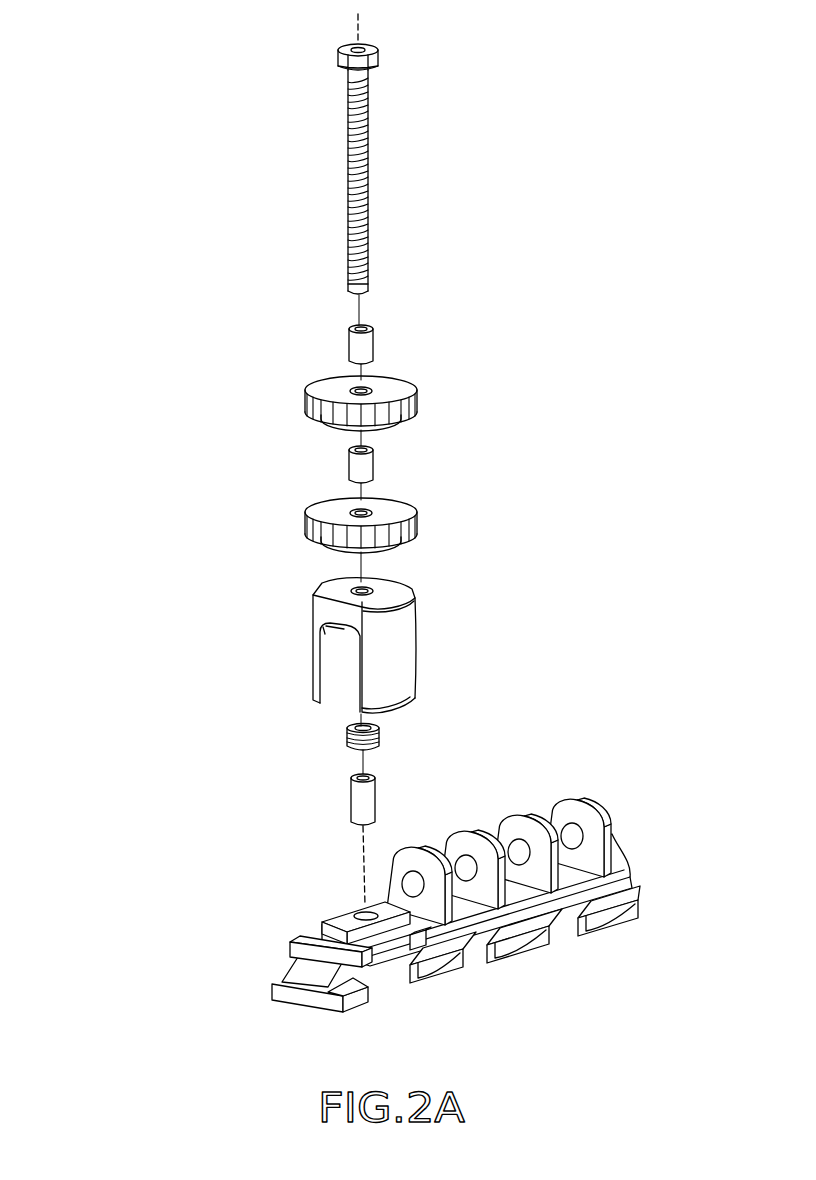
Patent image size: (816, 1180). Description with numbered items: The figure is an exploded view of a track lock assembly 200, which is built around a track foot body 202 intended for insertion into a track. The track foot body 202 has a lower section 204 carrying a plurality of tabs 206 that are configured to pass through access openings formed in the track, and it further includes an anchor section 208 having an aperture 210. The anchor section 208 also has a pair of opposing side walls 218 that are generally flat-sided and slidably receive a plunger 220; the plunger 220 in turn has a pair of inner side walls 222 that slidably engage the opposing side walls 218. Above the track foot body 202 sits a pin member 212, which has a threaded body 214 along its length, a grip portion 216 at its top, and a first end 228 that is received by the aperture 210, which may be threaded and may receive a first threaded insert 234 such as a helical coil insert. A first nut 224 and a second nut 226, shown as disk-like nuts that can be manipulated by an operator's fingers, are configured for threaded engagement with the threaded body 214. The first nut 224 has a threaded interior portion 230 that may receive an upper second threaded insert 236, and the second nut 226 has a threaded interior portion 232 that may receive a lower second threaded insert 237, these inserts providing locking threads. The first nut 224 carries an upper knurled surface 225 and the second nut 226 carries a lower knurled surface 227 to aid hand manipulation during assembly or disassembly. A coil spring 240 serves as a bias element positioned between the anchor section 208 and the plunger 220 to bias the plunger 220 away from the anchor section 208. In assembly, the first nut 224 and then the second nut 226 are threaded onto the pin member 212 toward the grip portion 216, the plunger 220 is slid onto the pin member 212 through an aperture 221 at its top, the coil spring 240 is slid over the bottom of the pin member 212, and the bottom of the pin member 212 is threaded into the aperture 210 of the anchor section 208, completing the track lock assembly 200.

The track lock assembly 200 is at (186, 57).
The grip portion 216 is at (380, 53).
The pin member 212 is at (364, 152).
The threaded body 214 is at (360, 205).
The first end 228 is at (372, 275).
The upper second threaded insert 236 is at (368, 344).
The first nut 224 is at (410, 405).
The interior portion 230 is at (352, 388).
The upper knurled surface 225 is at (320, 413).
The lower second threaded insert 237 is at (372, 464).
The second nut 226 is at (413, 527).
The interior portion 232 is at (350, 508).
The lower knurled surface 227 is at (320, 535).
The plunger 220 is at (405, 639).
The aperture 221 is at (372, 592).
The inner side walls 222 is at (335, 660).
The coil spring 240 is at (385, 741).
The first threaded insert 234 is at (372, 803).
The track foot body 202 is at (612, 851).
The lower section 204 is at (567, 938).
The tabs 206 is at (640, 913).
The anchor section 208 is at (325, 926).
The aperture 210 is at (362, 909).
The opposing side walls 218 is at (387, 984).